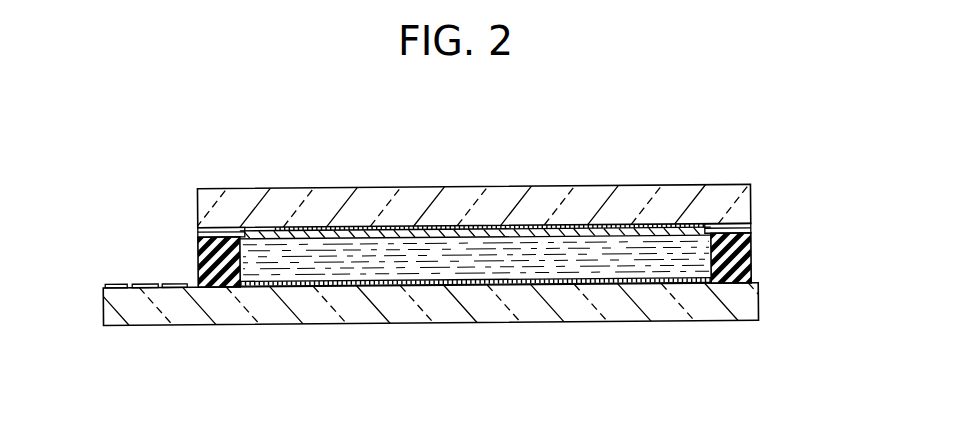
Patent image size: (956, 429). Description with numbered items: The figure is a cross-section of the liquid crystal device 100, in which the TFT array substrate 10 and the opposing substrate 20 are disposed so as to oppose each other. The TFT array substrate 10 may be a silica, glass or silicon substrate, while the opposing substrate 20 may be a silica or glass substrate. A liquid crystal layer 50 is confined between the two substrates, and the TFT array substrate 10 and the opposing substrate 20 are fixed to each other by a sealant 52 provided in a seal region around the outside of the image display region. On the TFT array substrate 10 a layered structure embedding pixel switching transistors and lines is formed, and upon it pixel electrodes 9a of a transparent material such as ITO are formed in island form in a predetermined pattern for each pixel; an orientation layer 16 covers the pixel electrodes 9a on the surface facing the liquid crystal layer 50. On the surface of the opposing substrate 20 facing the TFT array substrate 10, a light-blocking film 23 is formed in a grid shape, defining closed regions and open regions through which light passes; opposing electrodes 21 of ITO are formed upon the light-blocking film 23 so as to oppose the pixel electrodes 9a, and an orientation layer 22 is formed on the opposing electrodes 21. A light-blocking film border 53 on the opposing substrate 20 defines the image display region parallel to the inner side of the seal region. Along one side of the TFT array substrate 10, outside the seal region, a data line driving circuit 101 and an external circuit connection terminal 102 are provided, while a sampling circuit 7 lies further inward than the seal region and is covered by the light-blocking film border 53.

The liquid crystal device 100 is at (620, 102).
The opposing substrate 20 is at (456, 195).
The light-blocking film 23 is at (500, 224).
The orientation layer 22 is at (570, 243).
The opposing electrodes 21 is at (642, 225).
The light-blocking film border 53 is at (261, 226).
The sealant 52 is at (199, 260).
The liquid crystal layer 50 is at (470, 264).
The orientation layer 16 is at (637, 275).
The pixel electrodes 9a is at (310, 286).
The sampling circuit 7 is at (253, 286).
The TFT array substrate 10 is at (534, 314).
The data line driving circuit 101 is at (157, 281).
The external circuit connection terminal 102 is at (120, 280).